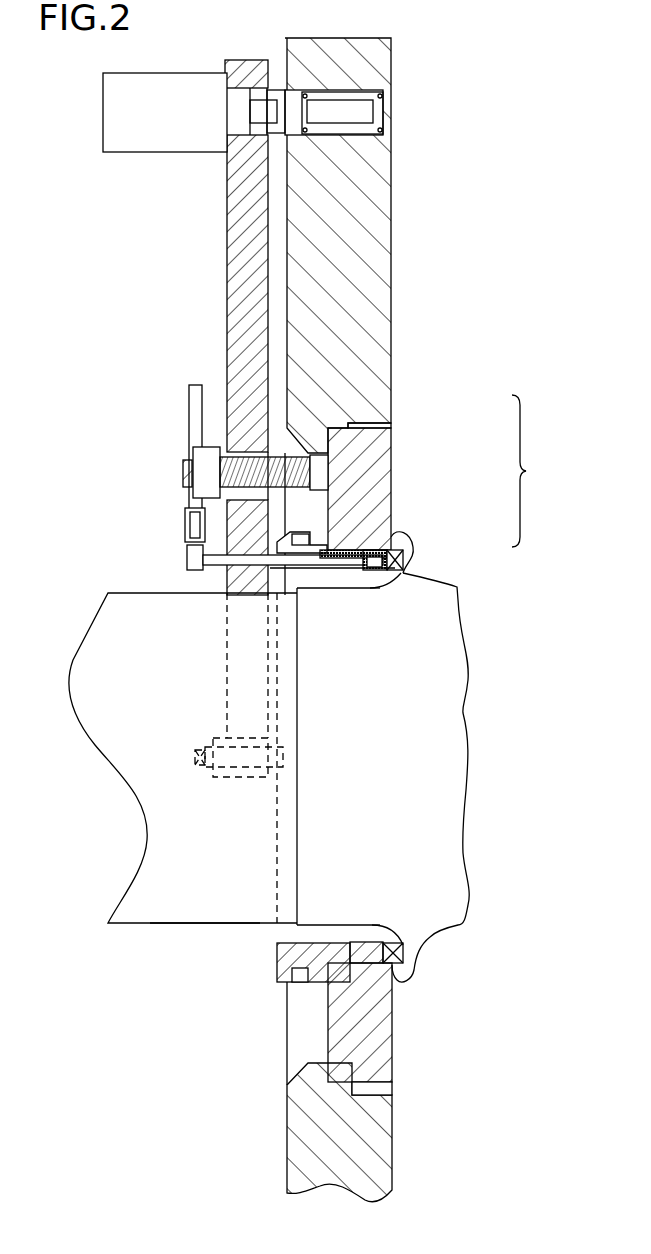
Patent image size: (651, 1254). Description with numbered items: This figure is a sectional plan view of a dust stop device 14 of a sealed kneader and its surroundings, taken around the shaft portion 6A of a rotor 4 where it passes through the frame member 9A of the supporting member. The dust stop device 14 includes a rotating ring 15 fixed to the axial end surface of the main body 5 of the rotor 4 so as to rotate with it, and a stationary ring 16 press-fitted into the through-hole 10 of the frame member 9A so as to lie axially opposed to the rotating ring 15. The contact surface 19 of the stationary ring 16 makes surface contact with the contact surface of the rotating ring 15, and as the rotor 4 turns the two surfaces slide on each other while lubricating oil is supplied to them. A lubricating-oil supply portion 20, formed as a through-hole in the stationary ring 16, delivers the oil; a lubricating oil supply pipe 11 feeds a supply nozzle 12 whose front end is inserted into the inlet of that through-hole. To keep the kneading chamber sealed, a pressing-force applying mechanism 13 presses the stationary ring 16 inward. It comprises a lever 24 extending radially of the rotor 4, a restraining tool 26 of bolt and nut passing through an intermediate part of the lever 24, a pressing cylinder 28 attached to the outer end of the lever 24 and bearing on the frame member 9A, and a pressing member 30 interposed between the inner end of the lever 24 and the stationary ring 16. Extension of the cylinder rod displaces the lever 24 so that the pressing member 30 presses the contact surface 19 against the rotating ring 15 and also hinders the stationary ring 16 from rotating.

The frame member 9A is at (392, 63).
The pressing cylinder 28 is at (118, 118).
The pressing-force applying mechanism 13 is at (98, 272).
The lever 24 is at (230, 263).
The lubricating oil supply pipe 11 is at (191, 398).
The restraining tool 26 is at (183, 470).
The pressing member 30 is at (290, 535).
The supply nozzle 12 is at (310, 578).
The shaft portion 6A is at (115, 625).
The lubricating-oil supply portion 20 is at (393, 547).
The stationary ring 16 is at (393, 560).
The rotating ring 15 is at (412, 547).
The dust stop device 14 is at (538, 471).
The contact surface 19 is at (370, 586).
The through-hole 10 is at (342, 578).
The main body 5 is at (425, 782).
The rotor 4 is at (205, 932).